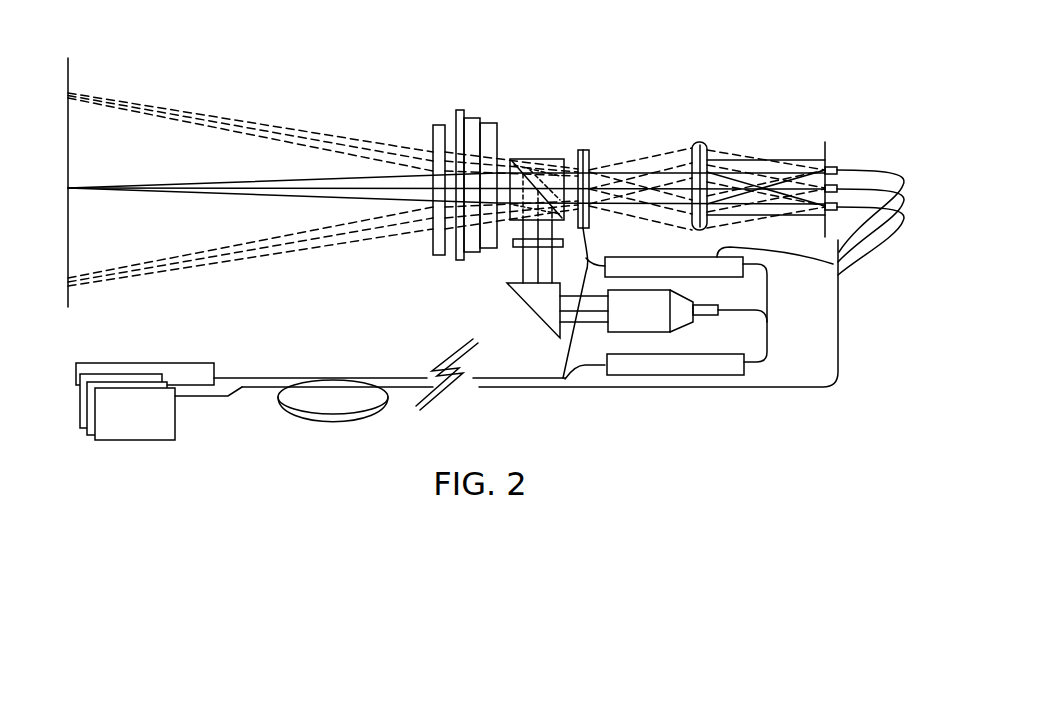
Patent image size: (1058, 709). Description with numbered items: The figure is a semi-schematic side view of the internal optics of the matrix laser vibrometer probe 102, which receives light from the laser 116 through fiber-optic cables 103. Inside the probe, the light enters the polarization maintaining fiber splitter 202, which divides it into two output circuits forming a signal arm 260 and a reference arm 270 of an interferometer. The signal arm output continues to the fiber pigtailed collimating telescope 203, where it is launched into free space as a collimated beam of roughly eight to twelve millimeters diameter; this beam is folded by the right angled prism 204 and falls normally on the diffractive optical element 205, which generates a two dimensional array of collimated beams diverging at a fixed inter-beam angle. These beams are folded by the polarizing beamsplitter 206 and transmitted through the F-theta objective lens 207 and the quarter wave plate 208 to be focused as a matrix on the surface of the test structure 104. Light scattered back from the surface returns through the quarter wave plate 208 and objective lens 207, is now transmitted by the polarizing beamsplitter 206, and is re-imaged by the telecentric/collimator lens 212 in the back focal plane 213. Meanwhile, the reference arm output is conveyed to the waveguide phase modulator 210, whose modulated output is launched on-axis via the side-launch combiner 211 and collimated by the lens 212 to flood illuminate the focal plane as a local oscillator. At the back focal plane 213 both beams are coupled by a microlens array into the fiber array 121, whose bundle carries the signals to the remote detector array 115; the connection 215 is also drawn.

The matrix laser vibrometer probe 102 is at (690, 69).
The fiber-optic cables 103 is at (425, 357).
The test structure surface 104 is at (68, 157).
The detector array 115 is at (175, 427).
The laser 116 is at (176, 363).
The fiber array 121 is at (838, 168).
The fiber splitter 202 is at (660, 375).
The fiber pigtailed collimating telescope 203 is at (683, 333).
The prism 204 is at (534, 317).
The diffractive optical element 205 is at (515, 248).
The polarizing beamsplitter 206 is at (528, 158).
The F-theta objective lens 207 is at (488, 120).
The quarter wave plate 208 is at (433, 132).
The phase modulator 210 is at (838, 262).
The side-launch combiner 211 is at (590, 156).
The telecentric/collimator lens 212 is at (707, 148).
The back focal plane 213 is at (825, 235).
The signal line 215 is at (563, 378).
The signal arm 260 is at (741, 299).
The reference arm 270 is at (783, 275).